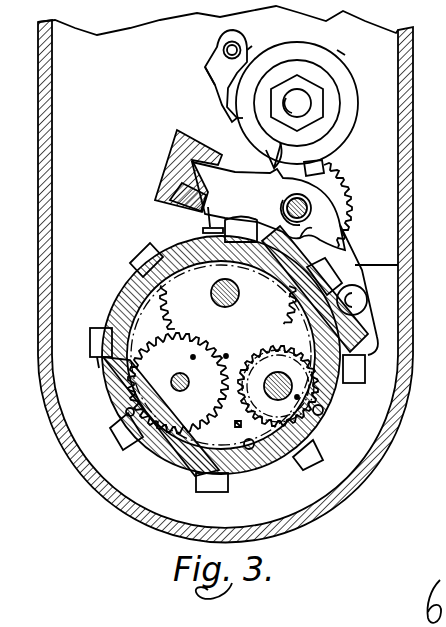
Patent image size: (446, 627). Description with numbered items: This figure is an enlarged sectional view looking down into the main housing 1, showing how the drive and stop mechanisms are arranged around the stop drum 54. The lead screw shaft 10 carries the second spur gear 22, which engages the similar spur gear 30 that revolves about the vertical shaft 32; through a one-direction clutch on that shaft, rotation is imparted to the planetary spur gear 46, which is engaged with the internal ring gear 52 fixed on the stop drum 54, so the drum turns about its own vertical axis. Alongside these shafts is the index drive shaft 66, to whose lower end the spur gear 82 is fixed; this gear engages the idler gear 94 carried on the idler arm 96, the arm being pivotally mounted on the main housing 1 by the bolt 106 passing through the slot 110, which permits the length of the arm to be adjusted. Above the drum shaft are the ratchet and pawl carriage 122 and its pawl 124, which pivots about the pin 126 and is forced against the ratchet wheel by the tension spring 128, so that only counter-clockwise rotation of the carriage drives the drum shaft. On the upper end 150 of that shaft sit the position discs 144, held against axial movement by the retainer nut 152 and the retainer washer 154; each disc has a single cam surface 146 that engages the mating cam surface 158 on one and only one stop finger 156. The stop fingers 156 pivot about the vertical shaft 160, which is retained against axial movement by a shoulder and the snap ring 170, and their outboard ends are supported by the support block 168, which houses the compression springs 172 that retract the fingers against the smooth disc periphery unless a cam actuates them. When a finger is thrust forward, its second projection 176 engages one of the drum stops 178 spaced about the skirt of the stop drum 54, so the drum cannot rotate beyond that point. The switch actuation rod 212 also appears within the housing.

The main housing 1 is at (407, 83).
The shaft 10 is at (184, 382).
The second spur gear 22 is at (193, 357).
The spur gear 30 is at (272, 346).
The vertical shaft 32 is at (287, 380).
The planetary spur gear 46 is at (297, 397).
The internal ring gear 52 is at (247, 448).
The stop drum 54 is at (330, 450).
The index drive shaft 66 is at (219, 291).
The spur gear 82 is at (177, 302).
The idler gear 94 is at (340, 192).
The idler arm 96 is at (343, 252).
The bolt 106 is at (346, 302).
The slot 110 is at (350, 318).
The ratchet and pawl carriage 122 is at (216, 57).
The pawl 124 is at (228, 66).
The pin 126 is at (227, 50).
The tension spring 128 is at (253, 48).
The position discs 144 is at (349, 80).
The cam surface 146 is at (337, 50).
The upper end 150 is at (306, 103).
The retainer nut 152 is at (316, 113).
The retainer washer 154 is at (243, 118).
The stop finger 156 is at (256, 197).
The cam surface 158 is at (280, 146).
The vertical shaft 160 is at (298, 230).
The support block 168 is at (178, 136).
The snap ring 170 is at (287, 206).
The compression springs 172 is at (160, 191).
The second projection 176 is at (213, 222).
The drum stops 178 is at (131, 264).
The switch actuation rod 212 is at (194, 459).